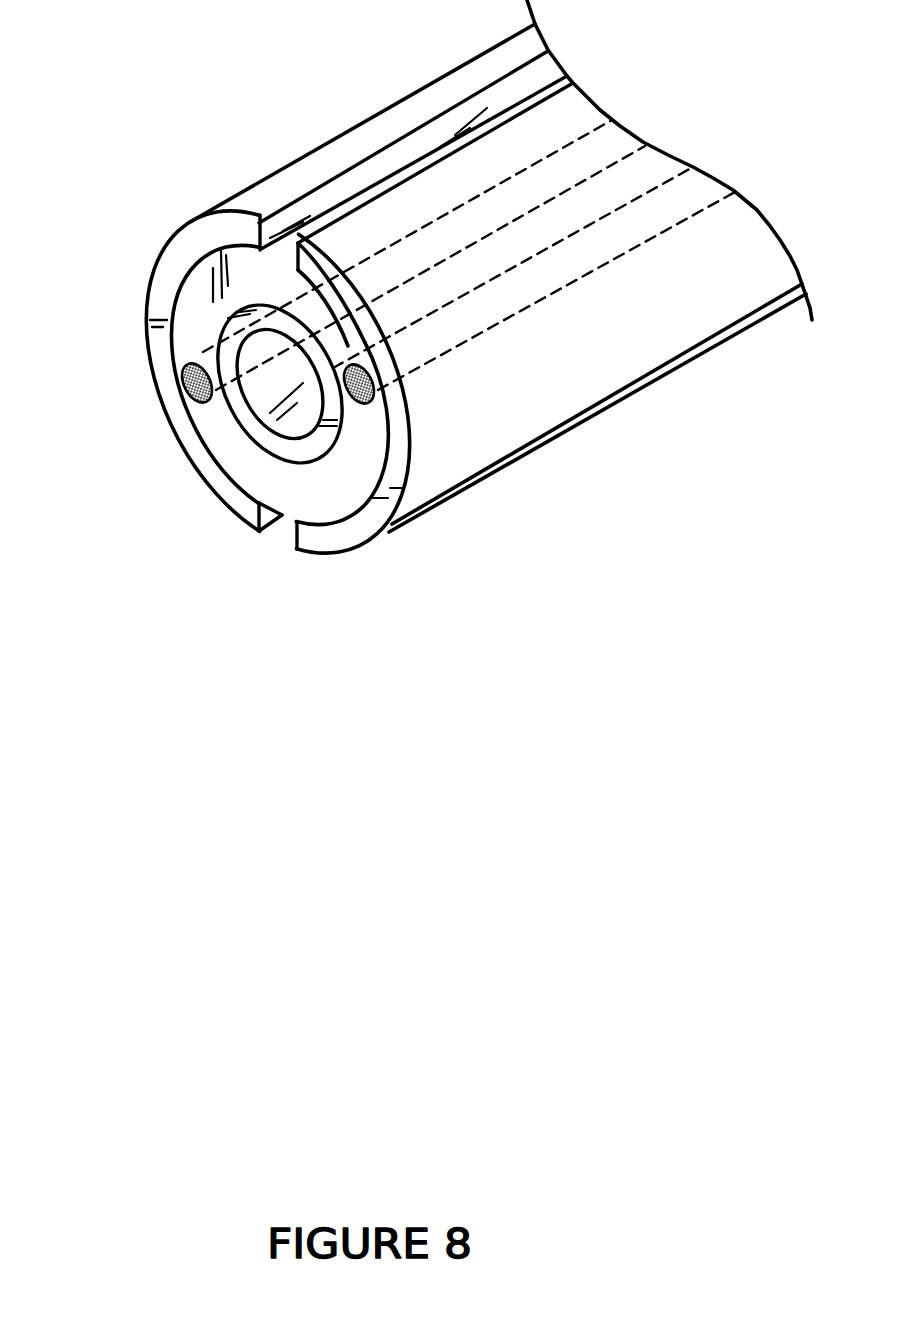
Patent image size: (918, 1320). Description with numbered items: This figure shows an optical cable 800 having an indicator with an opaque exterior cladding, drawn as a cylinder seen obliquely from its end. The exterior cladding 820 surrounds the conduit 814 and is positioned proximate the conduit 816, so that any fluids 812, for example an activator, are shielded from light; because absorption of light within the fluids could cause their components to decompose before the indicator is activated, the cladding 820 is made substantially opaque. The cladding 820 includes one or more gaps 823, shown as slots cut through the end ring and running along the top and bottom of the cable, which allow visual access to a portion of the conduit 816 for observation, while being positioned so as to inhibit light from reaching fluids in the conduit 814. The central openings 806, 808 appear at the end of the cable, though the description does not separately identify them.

The cylindrical body assembly 800 is at (173, 237).
The inner bore 806 is at (265, 400).
The counterbore 808 is at (267, 438).
The fluids 812 is at (376, 381).
The conduit 814 is at (381, 424).
The conduit 816 is at (198, 297).
The exterior cladding 820 is at (343, 533).
The gaps 823 is at (329, 172).